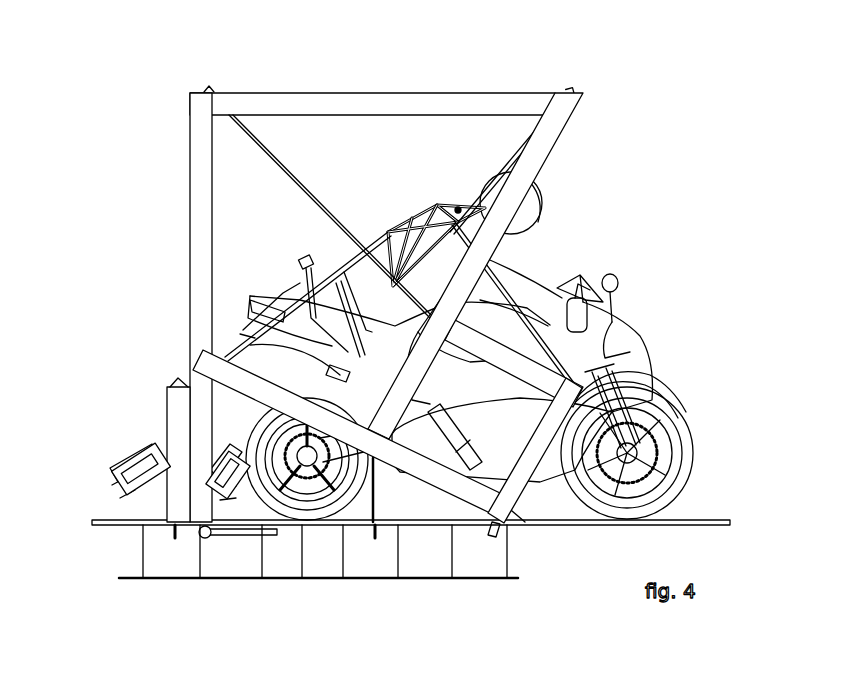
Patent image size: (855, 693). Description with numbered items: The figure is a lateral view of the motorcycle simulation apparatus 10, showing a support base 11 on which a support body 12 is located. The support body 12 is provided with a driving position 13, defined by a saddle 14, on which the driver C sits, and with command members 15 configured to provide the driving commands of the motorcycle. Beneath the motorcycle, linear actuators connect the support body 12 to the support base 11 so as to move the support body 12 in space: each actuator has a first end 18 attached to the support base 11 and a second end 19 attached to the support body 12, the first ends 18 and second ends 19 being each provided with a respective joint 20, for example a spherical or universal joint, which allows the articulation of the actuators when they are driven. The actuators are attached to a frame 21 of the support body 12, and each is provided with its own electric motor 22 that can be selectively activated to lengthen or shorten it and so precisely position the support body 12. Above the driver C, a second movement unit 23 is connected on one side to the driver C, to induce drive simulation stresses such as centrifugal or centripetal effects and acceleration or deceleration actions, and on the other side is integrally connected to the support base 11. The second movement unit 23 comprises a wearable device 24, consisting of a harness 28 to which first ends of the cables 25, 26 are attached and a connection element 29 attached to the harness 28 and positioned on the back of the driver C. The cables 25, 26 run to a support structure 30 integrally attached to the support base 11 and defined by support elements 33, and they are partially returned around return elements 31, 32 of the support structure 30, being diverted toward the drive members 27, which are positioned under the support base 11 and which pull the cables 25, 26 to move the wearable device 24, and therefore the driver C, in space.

The simulation apparatus 10 is at (652, 132).
The support base 11 is at (727, 524).
The support body 12 is at (638, 370).
The driving position 13 is at (352, 286).
The saddle 14 is at (346, 272).
The command members 15 is at (580, 292).
The first end 18 is at (132, 470).
The second end 19 is at (298, 290).
The joint 20 is at (305, 258).
The frame 21 is at (283, 291).
The electric motor 22 is at (336, 371).
The second movement unit 23 is at (424, 208).
The wearable device 24 is at (412, 217).
The cable 25 is at (268, 147).
The cable 26 is at (372, 232).
The drive members 27 is at (178, 566).
The harness 28 is at (458, 206).
The connection element 29 is at (420, 200).
The support structure 30 is at (346, 330).
The return element 31 is at (210, 85).
The return element 32 is at (178, 384).
The support element 33 is at (200, 232).
The driver C is at (540, 213).